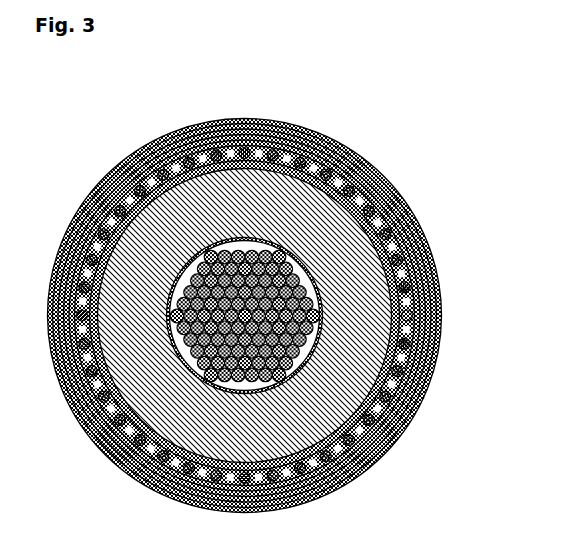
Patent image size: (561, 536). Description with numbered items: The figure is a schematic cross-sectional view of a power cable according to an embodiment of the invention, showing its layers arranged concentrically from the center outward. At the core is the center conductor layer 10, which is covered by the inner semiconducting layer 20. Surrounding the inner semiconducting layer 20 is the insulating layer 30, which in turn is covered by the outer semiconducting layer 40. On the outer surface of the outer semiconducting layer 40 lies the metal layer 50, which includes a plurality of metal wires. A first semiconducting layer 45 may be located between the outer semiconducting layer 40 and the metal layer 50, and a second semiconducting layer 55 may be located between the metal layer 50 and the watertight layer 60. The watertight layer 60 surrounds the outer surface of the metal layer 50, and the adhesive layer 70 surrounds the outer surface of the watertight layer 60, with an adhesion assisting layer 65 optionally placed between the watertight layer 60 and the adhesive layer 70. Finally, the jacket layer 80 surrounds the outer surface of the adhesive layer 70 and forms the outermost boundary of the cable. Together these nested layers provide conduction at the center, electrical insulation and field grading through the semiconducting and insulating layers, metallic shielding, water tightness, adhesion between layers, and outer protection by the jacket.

The center conductor layer 10 is at (246, 250).
The inner semiconducting layer 20 is at (259, 239).
The insulating layer 30 is at (277, 205).
The outer semiconducting layer 40 is at (320, 192).
The first semiconducting layer 45 is at (347, 204).
The metal layer 50 is at (259, 316).
The second semiconducting layer 55 is at (404, 248).
The watertight layer 60 is at (417, 270).
The adhesion assisting layer 65 is at (426, 290).
The adhesive layer 70 is at (433, 312).
The jacket layer 80 is at (438, 340).